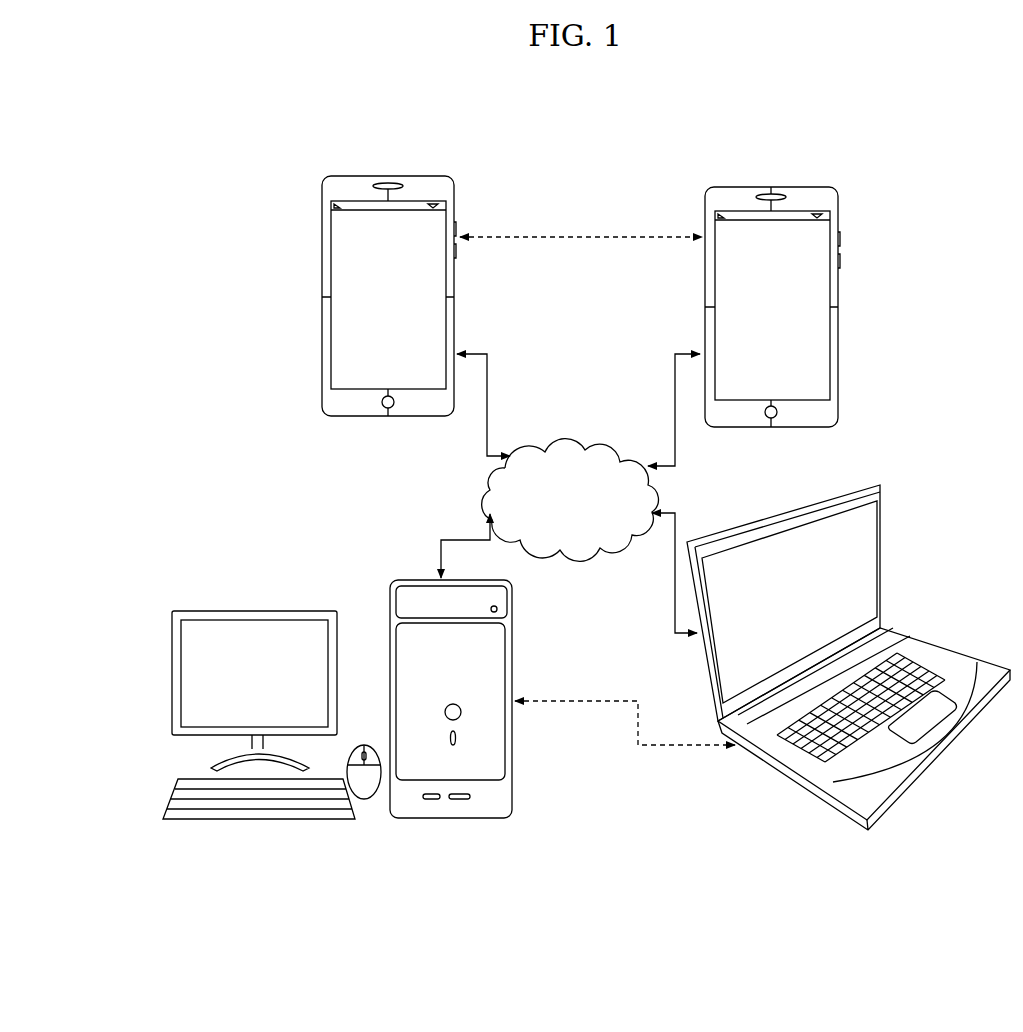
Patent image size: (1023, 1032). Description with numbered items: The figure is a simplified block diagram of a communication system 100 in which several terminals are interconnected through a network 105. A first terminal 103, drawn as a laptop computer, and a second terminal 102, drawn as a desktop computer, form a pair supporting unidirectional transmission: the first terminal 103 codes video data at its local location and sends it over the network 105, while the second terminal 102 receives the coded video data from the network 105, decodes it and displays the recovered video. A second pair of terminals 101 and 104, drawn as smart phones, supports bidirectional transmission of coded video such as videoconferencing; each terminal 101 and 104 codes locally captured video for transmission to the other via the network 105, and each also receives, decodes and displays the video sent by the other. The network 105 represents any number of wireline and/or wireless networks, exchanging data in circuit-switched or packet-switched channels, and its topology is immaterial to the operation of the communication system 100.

The communication system 100 is at (191, 153).
The terminal 101 is at (322, 284).
The second terminal 102 is at (512, 787).
The first terminal 103 is at (700, 656).
The terminal 104 is at (705, 280).
The network 105 is at (575, 446).